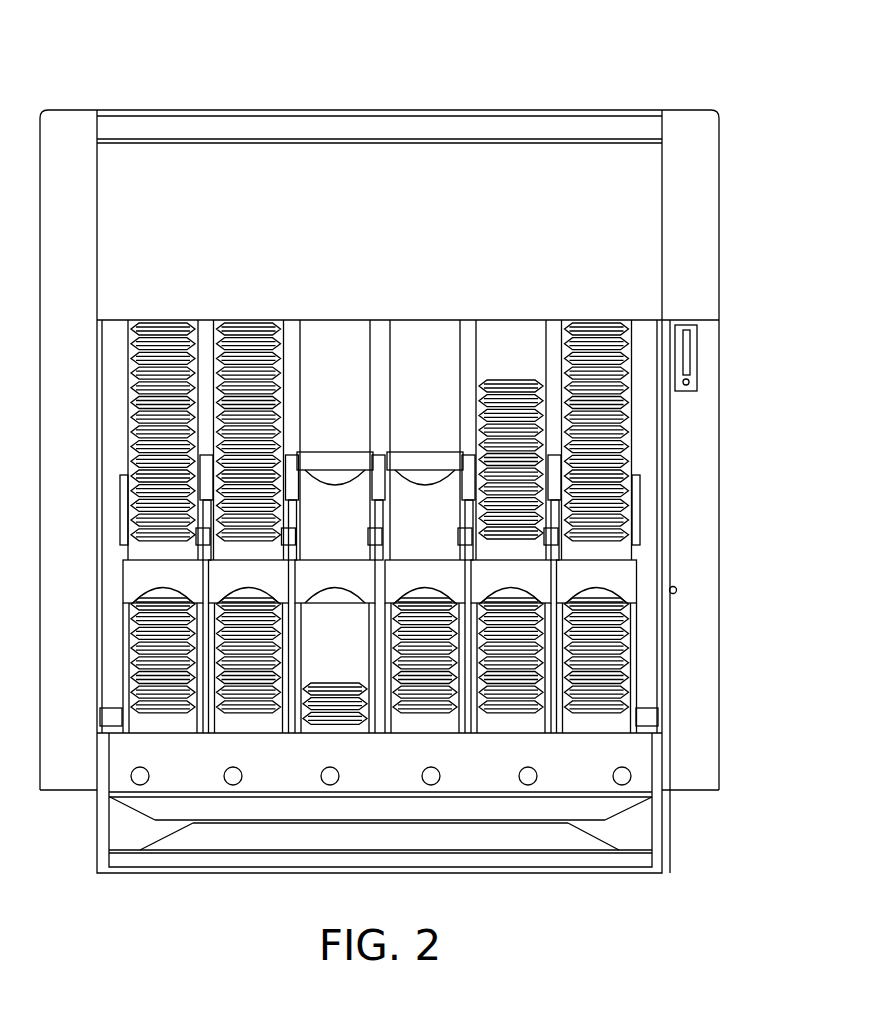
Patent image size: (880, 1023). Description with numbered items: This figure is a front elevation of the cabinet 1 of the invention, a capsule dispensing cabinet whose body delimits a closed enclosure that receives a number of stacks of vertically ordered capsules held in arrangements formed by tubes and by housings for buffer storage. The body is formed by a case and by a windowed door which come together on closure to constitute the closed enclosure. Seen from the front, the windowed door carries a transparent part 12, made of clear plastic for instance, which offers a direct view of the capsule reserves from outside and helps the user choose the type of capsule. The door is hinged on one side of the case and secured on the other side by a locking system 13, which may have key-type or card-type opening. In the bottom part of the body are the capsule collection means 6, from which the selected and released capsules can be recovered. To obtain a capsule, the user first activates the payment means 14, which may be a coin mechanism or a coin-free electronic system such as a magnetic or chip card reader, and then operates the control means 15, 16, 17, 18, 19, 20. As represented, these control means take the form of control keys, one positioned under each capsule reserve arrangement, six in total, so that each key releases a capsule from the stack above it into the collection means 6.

The cabinet 1 is at (379, 441).
The capsule collection means 6 is at (90, 795).
The transparent part 12 is at (512, 340).
The locking system 13 is at (677, 590).
The payment means 14 is at (730, 322).
The control means 15 is at (140, 786).
The control means 16 is at (233, 786).
The control means 17 is at (330, 786).
The control means 18 is at (431, 786).
The control means 19 is at (528, 786).
The control means 20 is at (622, 786).